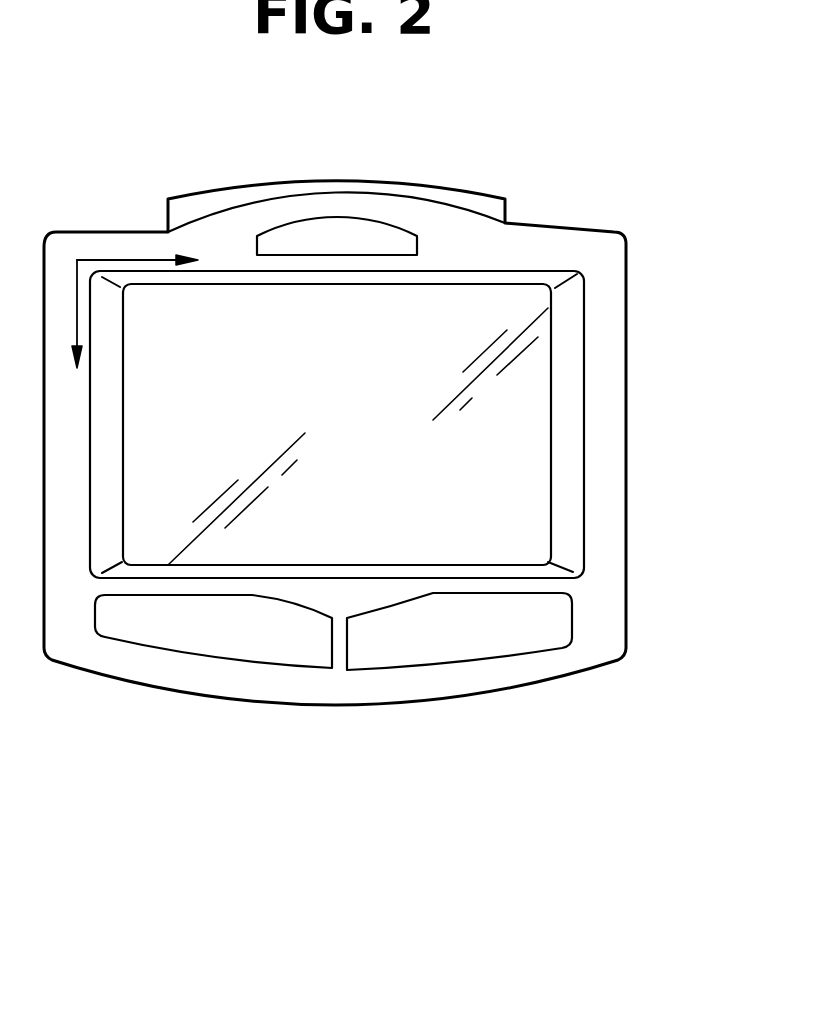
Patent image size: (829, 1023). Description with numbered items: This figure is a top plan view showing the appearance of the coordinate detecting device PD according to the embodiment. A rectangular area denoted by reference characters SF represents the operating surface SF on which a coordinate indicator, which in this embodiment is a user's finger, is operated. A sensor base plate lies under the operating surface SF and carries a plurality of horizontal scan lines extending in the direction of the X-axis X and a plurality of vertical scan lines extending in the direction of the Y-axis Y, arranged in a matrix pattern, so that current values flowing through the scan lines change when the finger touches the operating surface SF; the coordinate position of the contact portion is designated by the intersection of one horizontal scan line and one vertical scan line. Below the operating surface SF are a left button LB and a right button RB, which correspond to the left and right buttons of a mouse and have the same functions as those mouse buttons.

The coordinate detecting device PD is at (587, 178).
The operating surface SF is at (533, 412).
The left button LB is at (205, 640).
The right button RB is at (445, 640).
The X-axis X is at (137, 247).
The Y-axis Y is at (65, 314).